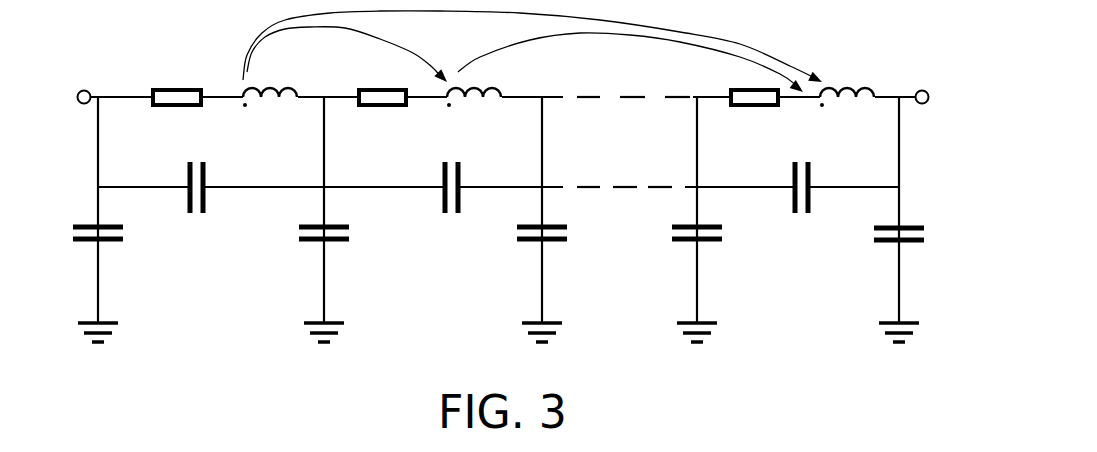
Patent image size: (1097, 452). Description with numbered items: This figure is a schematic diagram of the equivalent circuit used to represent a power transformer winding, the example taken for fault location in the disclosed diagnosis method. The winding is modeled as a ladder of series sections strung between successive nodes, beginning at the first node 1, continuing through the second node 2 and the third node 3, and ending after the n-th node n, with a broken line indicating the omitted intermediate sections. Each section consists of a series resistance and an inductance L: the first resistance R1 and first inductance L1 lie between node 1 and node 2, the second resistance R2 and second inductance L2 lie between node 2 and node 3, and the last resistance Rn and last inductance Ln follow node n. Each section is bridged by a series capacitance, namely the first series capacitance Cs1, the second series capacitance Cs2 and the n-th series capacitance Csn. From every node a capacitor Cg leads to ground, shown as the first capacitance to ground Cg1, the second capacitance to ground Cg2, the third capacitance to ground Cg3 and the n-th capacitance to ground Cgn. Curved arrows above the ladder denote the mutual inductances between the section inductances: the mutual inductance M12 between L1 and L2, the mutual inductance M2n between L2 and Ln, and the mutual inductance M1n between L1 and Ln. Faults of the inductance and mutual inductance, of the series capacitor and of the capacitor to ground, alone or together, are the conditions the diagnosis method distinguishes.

The first node 1 is at (98, 206).
The second node 2 is at (324, 207).
The third node 3 is at (542, 207).
The n-th node n is at (697, 208).
The first series resistance R1 is at (177, 114).
The second series resistance R2 is at (382, 114).
The n-th series resistance Rn is at (754, 114).
The first inductance L1 is at (270, 89).
The second inductance L2 is at (474, 89).
The n-th inductance Ln is at (847, 89).
The first series capacitance Cs1 is at (192, 205).
The second series capacitance Cs2 is at (450, 205).
The n-th series capacitance Csn is at (801, 205).
The first capacitance to ground Cg1 is at (119, 238).
The second capacitance to ground Cg2 is at (346, 238).
The third capacitance to ground Cg3 is at (563, 238).
The n-th capacitance to ground Cgn is at (718, 238).
The mutual inductance between first and second inductances M12 is at (347, 54).
The mutual inductance between second and n-th inductances M2n is at (630, 62).
The mutual inductance between first and n-th inductances M1n is at (532, 46).